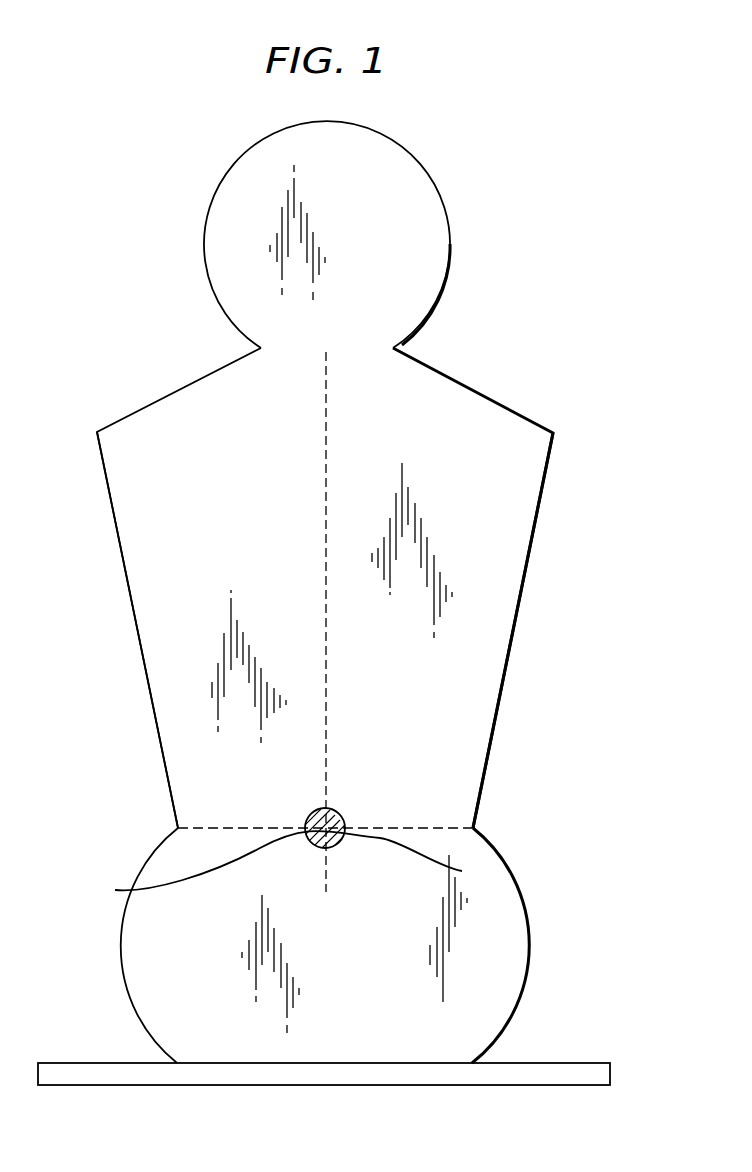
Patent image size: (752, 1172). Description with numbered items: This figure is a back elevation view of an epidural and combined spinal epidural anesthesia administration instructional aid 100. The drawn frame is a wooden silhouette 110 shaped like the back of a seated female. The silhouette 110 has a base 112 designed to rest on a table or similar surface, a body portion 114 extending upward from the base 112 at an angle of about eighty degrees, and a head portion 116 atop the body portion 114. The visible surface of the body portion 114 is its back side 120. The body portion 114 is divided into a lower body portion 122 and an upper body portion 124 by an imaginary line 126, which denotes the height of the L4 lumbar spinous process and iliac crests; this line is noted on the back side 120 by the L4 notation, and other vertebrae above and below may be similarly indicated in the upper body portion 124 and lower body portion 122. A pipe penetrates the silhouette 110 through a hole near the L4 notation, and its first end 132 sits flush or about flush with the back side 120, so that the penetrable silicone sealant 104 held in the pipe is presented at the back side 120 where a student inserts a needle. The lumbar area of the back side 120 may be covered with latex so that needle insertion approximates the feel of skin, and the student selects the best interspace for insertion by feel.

The epidural and combined spinal epidural anesthesia administration instructional ai 100 is at (522, 371).
The silicone sealant 104 is at (462, 871).
The wooden silhouette 110 is at (547, 634).
The base 112 is at (580, 1085).
The body portion 114 is at (103, 634).
The head portion 116 is at (452, 248).
The back side 120 is at (216, 482).
The lower body portion 122 is at (530, 945).
The upper body portion 124 is at (545, 505).
The imaginary line 126 is at (443, 828).
The first end 132 is at (115, 890).
The L4 notation L4 is at (404, 826).